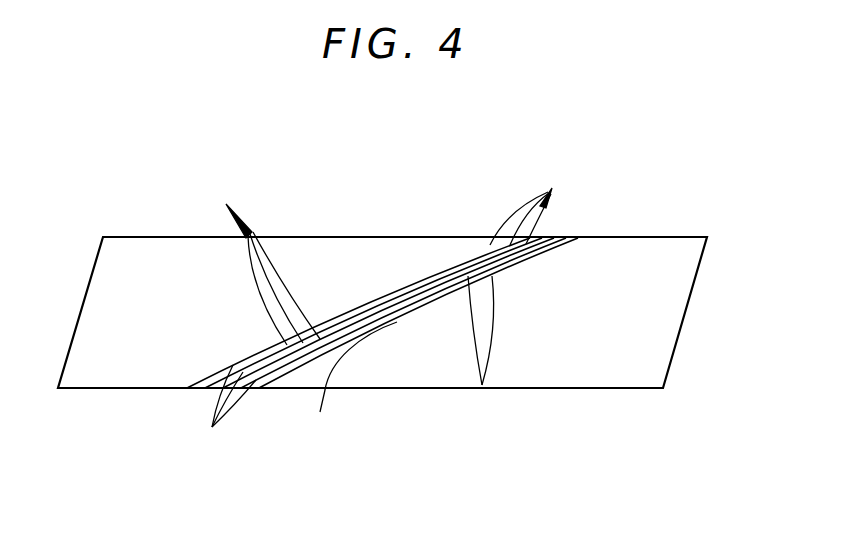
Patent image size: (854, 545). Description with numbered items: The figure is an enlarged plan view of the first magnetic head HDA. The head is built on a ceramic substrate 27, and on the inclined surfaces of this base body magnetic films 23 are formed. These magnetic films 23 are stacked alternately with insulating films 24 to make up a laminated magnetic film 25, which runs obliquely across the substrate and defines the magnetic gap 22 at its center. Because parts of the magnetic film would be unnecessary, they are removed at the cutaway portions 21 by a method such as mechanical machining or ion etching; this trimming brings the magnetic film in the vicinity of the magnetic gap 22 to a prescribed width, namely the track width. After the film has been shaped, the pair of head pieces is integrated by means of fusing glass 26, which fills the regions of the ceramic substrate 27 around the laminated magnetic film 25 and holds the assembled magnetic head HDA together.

The cutaway portions 21 is at (392, 290).
The magnetic gap 22 is at (380, 292).
The magnetic films 23 is at (482, 340).
The insulating films 24 is at (387, 252).
The laminated magnetic film 25 is at (211, 374).
The fusing glass 26 is at (411, 245).
The ceramic substrate 27 is at (136, 364).
The magnetic head HDA is at (568, 226).